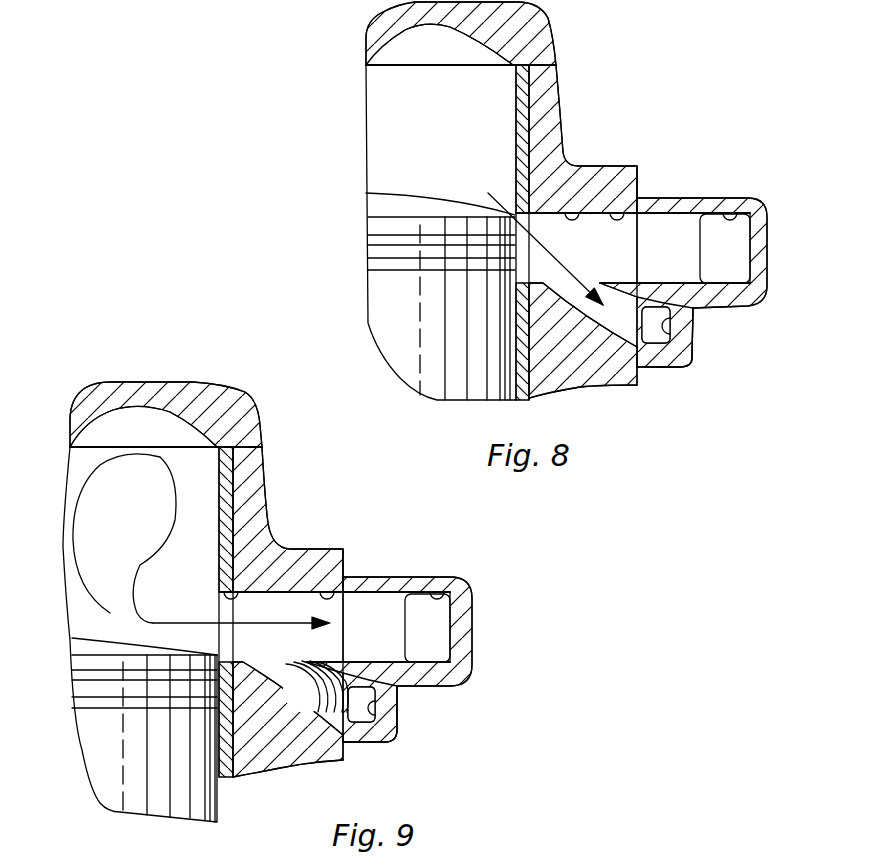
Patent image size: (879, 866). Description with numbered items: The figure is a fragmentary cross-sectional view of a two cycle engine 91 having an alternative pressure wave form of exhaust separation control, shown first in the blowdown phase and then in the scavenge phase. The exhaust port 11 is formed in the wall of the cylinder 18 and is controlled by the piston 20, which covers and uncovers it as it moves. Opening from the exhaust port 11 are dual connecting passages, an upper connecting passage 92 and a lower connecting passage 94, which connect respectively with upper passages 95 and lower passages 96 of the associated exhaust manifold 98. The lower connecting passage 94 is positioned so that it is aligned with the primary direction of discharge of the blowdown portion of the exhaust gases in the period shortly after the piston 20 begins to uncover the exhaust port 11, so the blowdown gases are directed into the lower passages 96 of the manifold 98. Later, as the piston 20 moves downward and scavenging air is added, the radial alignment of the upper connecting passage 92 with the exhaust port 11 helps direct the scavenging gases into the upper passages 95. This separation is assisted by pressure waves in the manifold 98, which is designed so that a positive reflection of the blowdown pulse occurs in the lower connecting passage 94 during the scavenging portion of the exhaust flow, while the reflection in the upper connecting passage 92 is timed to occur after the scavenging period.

In FIG. 8, the exhaust port 11 is at (596, 205).
In FIG. 9, the exhaust port 11 is at (222, 596).
In FIG. 8, the cylinder 18 is at (519, 123).
In FIG. 9, the cylinder 18 is at (222, 494).
In FIG. 8, the piston 20 is at (388, 305).
In FIG. 9, the piston 20 is at (103, 742).
In FIG. 8, the engine 91 is at (570, 100).
In FIG. 9, the engine 91 is at (280, 476).
In FIG. 8, the upper connecting passage 92 is at (640, 203).
In FIG. 9, the upper connecting passage 92 is at (344, 591).
In FIG. 8, the lower connecting passage 94 is at (615, 328).
In FIG. 9, the lower connecting passage 94 is at (318, 706).
In FIG. 8, the upper passages 95 is at (740, 210).
In FIG. 9, the upper passages 95 is at (450, 587).
In FIG. 8, the lower passages 96 is at (670, 340).
In FIG. 9, the lower passages 96 is at (377, 717).
In FIG. 8, the exhaust manifold 98 is at (754, 312).
In FIG. 9, the exhaust manifold 98 is at (476, 687).